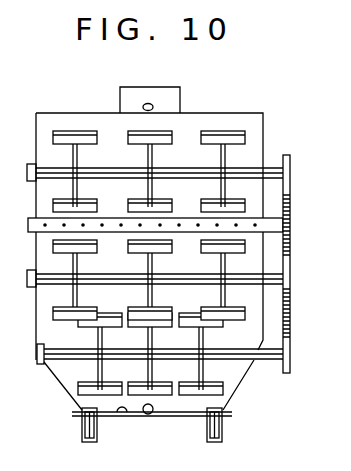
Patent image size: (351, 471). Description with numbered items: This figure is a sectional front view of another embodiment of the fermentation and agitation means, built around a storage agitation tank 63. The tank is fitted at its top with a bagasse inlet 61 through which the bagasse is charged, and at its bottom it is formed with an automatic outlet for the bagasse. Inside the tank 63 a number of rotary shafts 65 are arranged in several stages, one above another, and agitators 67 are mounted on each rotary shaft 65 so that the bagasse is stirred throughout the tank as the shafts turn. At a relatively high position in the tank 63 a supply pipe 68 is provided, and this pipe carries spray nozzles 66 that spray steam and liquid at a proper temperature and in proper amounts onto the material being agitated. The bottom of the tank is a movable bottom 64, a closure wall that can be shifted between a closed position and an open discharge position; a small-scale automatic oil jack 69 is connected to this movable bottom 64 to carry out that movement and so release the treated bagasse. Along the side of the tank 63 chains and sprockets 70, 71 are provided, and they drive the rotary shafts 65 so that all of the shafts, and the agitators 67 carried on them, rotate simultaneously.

The bagasse inlet 61 is at (180, 89).
The storage agitation tank 63 is at (264, 140).
The movable bottom 64 is at (123, 414).
The rotary shaft 65 is at (92, 167).
The spray nozzle 66 is at (40, 233).
The agitator 67 is at (65, 131).
The supply pipe 68 is at (43, 225).
The automatic oil jack 69 is at (151, 414).
The chain 70 is at (290, 156).
The sprocket 71 is at (290, 206).